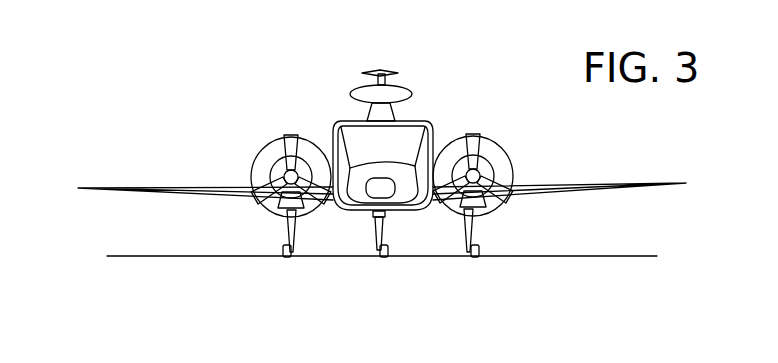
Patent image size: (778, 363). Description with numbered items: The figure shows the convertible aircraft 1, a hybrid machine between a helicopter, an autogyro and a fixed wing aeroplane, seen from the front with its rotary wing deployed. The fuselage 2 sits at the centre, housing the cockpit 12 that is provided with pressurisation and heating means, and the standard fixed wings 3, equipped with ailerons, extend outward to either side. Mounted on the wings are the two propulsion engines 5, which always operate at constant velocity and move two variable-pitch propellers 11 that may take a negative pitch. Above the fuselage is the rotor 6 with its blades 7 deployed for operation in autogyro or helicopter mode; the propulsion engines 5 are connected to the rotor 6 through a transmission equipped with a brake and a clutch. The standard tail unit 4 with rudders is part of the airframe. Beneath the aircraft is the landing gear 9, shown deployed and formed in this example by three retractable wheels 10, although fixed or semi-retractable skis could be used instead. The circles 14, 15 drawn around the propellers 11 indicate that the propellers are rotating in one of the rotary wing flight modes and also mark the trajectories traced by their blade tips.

The convertible aircraft 1 is at (206, 124).
The fuselage 2 is at (343, 212).
The fixed wings 3 is at (585, 183).
The tail unit 4 is at (392, 87).
The propulsion engines 5 is at (300, 165).
The rotor 6 is at (390, 56).
The blade 7 is at (378, 71).
The landing gear 9 is at (486, 237).
The retractable wheels 10 is at (287, 249).
The variable-pitch propellers 11 is at (287, 150).
The cockpit 12 is at (403, 136).
The circle 14 is at (283, 212).
The circle 15 is at (460, 207).